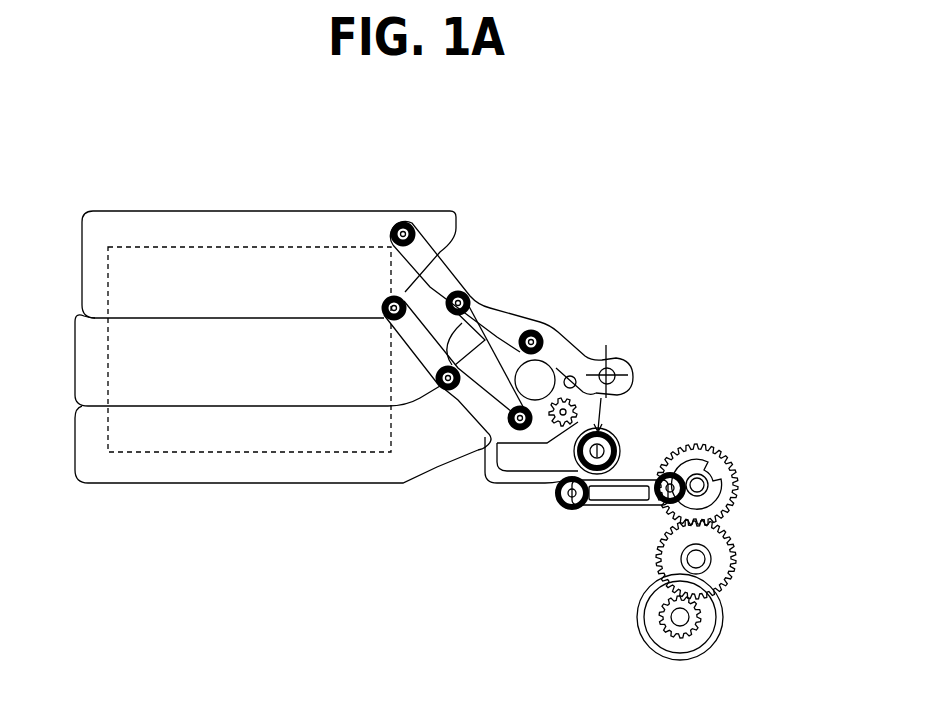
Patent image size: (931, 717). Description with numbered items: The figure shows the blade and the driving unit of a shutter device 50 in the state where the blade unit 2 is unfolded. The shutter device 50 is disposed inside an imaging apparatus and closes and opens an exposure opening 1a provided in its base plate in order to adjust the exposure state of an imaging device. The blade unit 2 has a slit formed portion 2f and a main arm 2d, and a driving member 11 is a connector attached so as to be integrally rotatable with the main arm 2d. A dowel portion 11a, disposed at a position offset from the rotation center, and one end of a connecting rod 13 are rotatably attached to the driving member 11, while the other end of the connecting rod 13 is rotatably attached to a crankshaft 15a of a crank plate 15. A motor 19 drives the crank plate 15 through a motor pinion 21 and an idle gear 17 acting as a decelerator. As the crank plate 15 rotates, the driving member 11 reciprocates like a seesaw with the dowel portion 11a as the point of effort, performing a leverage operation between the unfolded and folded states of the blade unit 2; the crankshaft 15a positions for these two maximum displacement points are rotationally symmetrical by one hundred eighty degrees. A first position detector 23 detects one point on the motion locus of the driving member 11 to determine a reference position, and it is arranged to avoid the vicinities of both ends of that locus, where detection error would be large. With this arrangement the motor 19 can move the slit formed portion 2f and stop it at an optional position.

The shutter device 50 is at (588, 188).
The slit formed portion 2f is at (200, 211).
The exposure opening 1a is at (208, 452).
The blade unit 2 is at (498, 213).
The main arm 2d is at (472, 402).
The driving member 11 is at (643, 390).
The dowel portion 11a is at (568, 510).
The connecting rod 13 is at (618, 492).
The crank plate 15 is at (722, 473).
The crankshaft 15a is at (660, 466).
The idle gear 17 is at (718, 555).
The motor 19 is at (640, 632).
The motor pinion 21 is at (700, 625).
The first position detector 23 is at (560, 422).